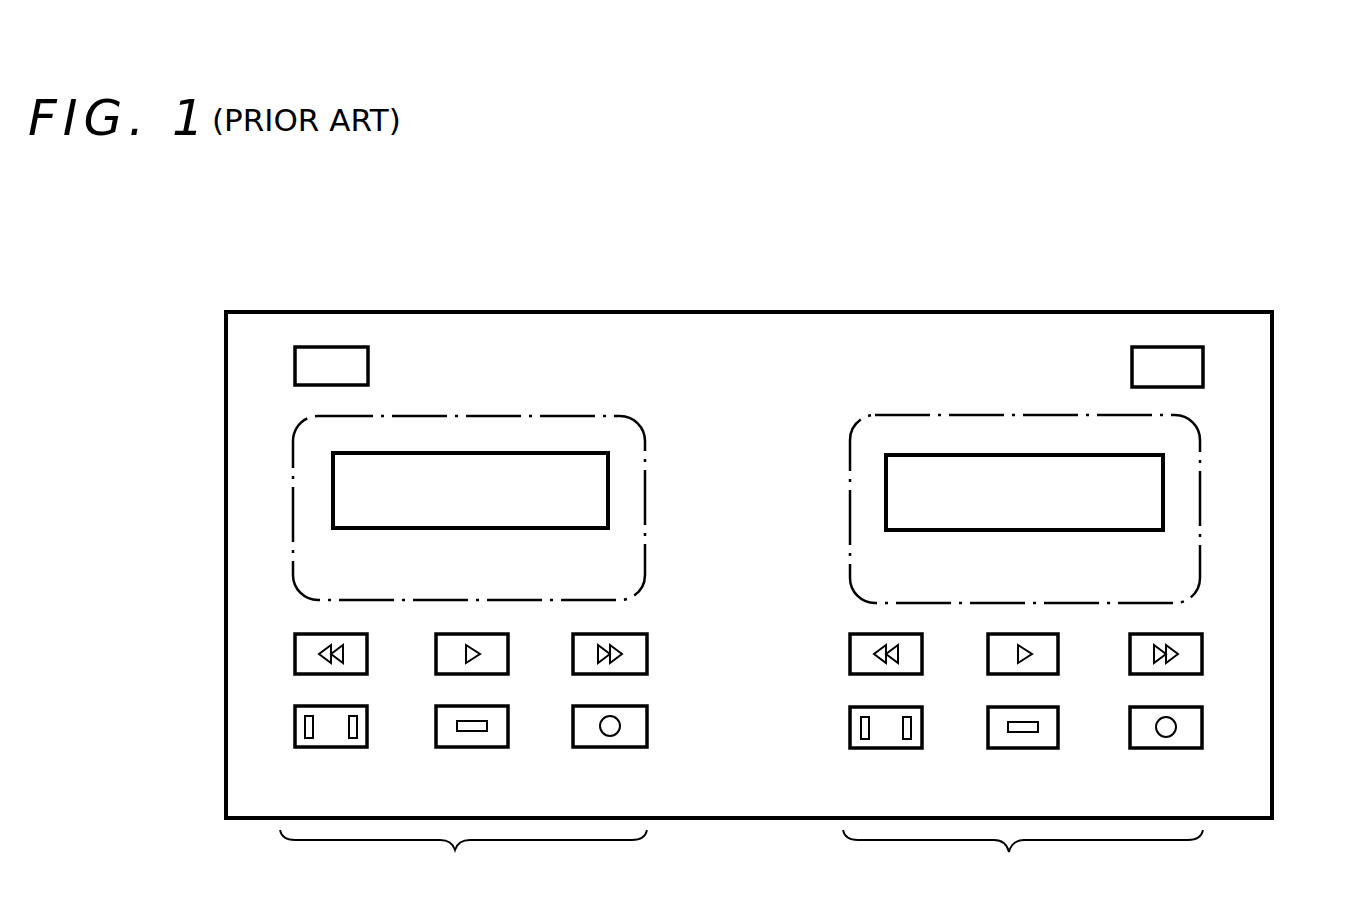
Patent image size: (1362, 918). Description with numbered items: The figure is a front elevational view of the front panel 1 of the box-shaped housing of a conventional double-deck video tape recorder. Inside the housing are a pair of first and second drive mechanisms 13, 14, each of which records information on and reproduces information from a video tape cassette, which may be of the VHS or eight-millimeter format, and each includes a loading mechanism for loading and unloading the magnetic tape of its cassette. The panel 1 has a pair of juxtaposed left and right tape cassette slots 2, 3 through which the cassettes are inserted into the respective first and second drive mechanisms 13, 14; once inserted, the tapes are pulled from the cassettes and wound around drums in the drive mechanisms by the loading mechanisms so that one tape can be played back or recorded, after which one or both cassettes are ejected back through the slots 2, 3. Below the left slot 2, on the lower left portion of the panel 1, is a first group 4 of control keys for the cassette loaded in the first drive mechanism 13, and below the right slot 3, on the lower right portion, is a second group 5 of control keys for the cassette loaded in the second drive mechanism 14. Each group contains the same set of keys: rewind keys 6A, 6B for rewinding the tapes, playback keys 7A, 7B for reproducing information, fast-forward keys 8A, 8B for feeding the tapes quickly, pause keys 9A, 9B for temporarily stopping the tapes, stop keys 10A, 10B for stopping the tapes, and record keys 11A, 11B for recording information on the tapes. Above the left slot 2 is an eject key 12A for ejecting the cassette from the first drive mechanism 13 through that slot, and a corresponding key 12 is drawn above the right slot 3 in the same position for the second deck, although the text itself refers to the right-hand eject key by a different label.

The front panel 1 is at (1005, 312).
The left tape cassette slot 2 is at (333, 485).
The right tape cassette slot 3 is at (1163, 500).
The first group of control keys 4 is at (463, 858).
The second group of control keys 5 is at (1023, 859).
The rewind key 6A is at (295, 653).
The playback key 7A is at (440, 634).
The fast-forward key 8A is at (647, 657).
The pause key 9A is at (295, 722).
The stop key 10A is at (450, 747).
The record key 11A is at (647, 735).
The rewind key 6B is at (850, 658).
The playback key 7B is at (1040, 634).
The fast-forward key 8B is at (1202, 657).
The pause key 9B is at (850, 737).
The stop key 10B is at (1035, 748).
The record key 11B is at (1202, 728).
The indicator for deck B 12 is at (1167, 347).
The eject key 12A is at (333, 347).
The first drive mechanism 13 is at (525, 416).
The second drive mechanism 14 is at (903, 415).